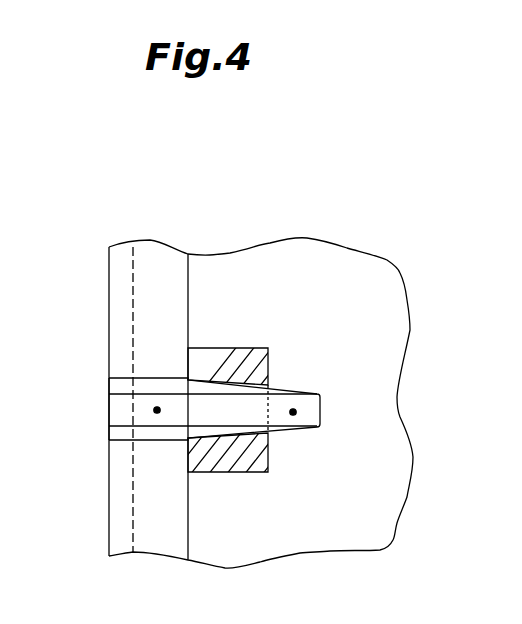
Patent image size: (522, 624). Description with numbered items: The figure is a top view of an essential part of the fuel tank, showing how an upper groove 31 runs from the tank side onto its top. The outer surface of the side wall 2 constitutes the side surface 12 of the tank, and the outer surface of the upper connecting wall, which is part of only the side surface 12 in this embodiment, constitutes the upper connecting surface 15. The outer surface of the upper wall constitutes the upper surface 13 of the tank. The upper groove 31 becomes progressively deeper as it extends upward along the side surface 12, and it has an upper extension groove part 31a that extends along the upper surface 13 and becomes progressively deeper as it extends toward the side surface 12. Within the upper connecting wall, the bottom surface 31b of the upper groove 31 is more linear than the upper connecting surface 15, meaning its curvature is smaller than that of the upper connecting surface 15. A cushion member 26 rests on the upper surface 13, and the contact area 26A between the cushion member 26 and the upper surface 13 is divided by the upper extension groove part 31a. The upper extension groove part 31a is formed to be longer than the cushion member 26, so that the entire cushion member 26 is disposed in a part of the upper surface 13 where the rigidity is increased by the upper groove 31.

The side wall 2 is at (122, 266).
The side surface 12 is at (107, 298).
The upper connecting surface 15 is at (157, 270).
The upper surface 13 is at (314, 253).
The cushion member 26 is at (248, 343).
The contact area 26A is at (221, 356).
The upper groove 31 is at (157, 410).
The upper extension groove part 31a is at (318, 399).
The bottom surface 31b is at (117, 418).